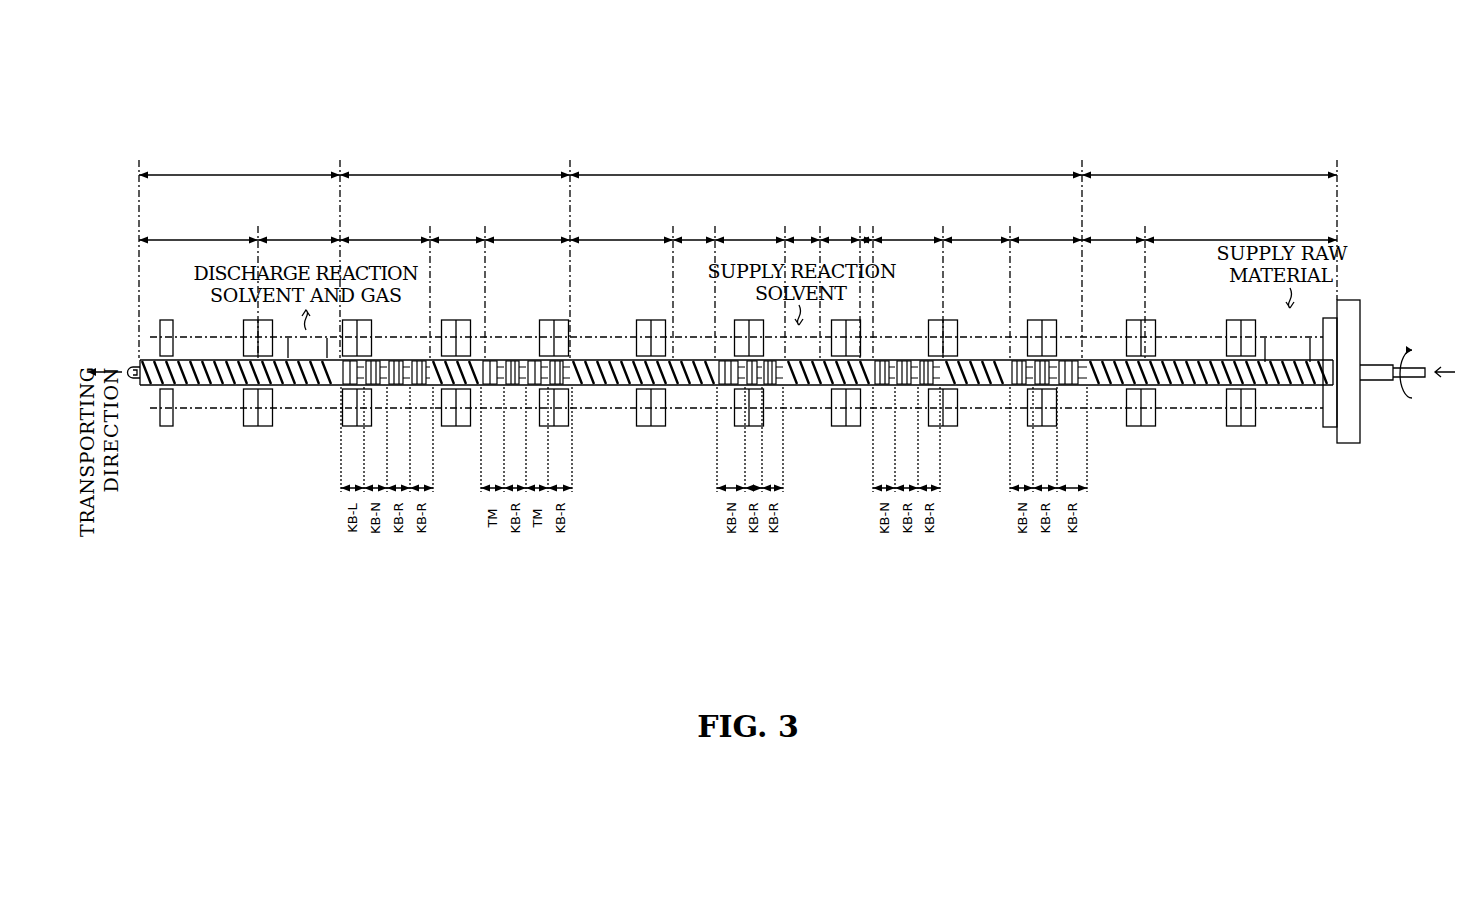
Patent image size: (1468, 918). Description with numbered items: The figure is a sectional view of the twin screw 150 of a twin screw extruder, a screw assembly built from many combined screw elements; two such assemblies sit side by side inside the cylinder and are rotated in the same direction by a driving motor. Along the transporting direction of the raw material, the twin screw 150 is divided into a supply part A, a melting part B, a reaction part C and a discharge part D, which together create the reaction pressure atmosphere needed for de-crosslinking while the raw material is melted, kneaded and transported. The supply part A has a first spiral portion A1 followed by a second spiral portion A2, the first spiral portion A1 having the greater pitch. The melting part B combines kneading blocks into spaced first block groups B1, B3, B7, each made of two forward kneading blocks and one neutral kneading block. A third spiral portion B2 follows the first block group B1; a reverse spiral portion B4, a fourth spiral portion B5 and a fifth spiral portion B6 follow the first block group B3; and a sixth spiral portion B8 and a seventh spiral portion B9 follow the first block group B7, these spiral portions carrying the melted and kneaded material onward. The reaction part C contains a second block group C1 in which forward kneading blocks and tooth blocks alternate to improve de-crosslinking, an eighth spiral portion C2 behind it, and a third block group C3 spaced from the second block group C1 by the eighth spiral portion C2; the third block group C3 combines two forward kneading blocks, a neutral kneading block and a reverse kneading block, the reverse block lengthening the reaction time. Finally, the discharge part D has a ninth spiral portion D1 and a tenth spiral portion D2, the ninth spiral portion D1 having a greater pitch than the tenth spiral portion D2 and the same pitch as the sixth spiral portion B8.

The twin screw 150 is at (233, 87).
The supply part A is at (1209, 163).
The melting part B is at (826, 163).
The reaction part C is at (455, 163).
The discharge part D is at (239, 163).
The first spiral portion A1 is at (1241, 228).
The second spiral portion A2 is at (1113, 228).
The first block group in the first order B1 is at (1046, 228).
The third spiral portion B2 is at (976, 228).
The first block group in the second order B3 is at (908, 228).
The reverse spiral portion B4 is at (866, 228).
The fourth spiral portion B5 is at (840, 228).
The fifth spiral portion B6 is at (802, 228).
The first block group in the third order B7 is at (750, 228).
The sixth spiral portion B8 is at (694, 228).
The seventh spiral portion B9 is at (621, 228).
The second block group C1 is at (527, 228).
The eighth spiral portion C2 is at (457, 228).
The third block group C3 is at (385, 228).
The ninth spiral portion D1 is at (299, 228).
The tenth spiral portion D2 is at (198, 228).